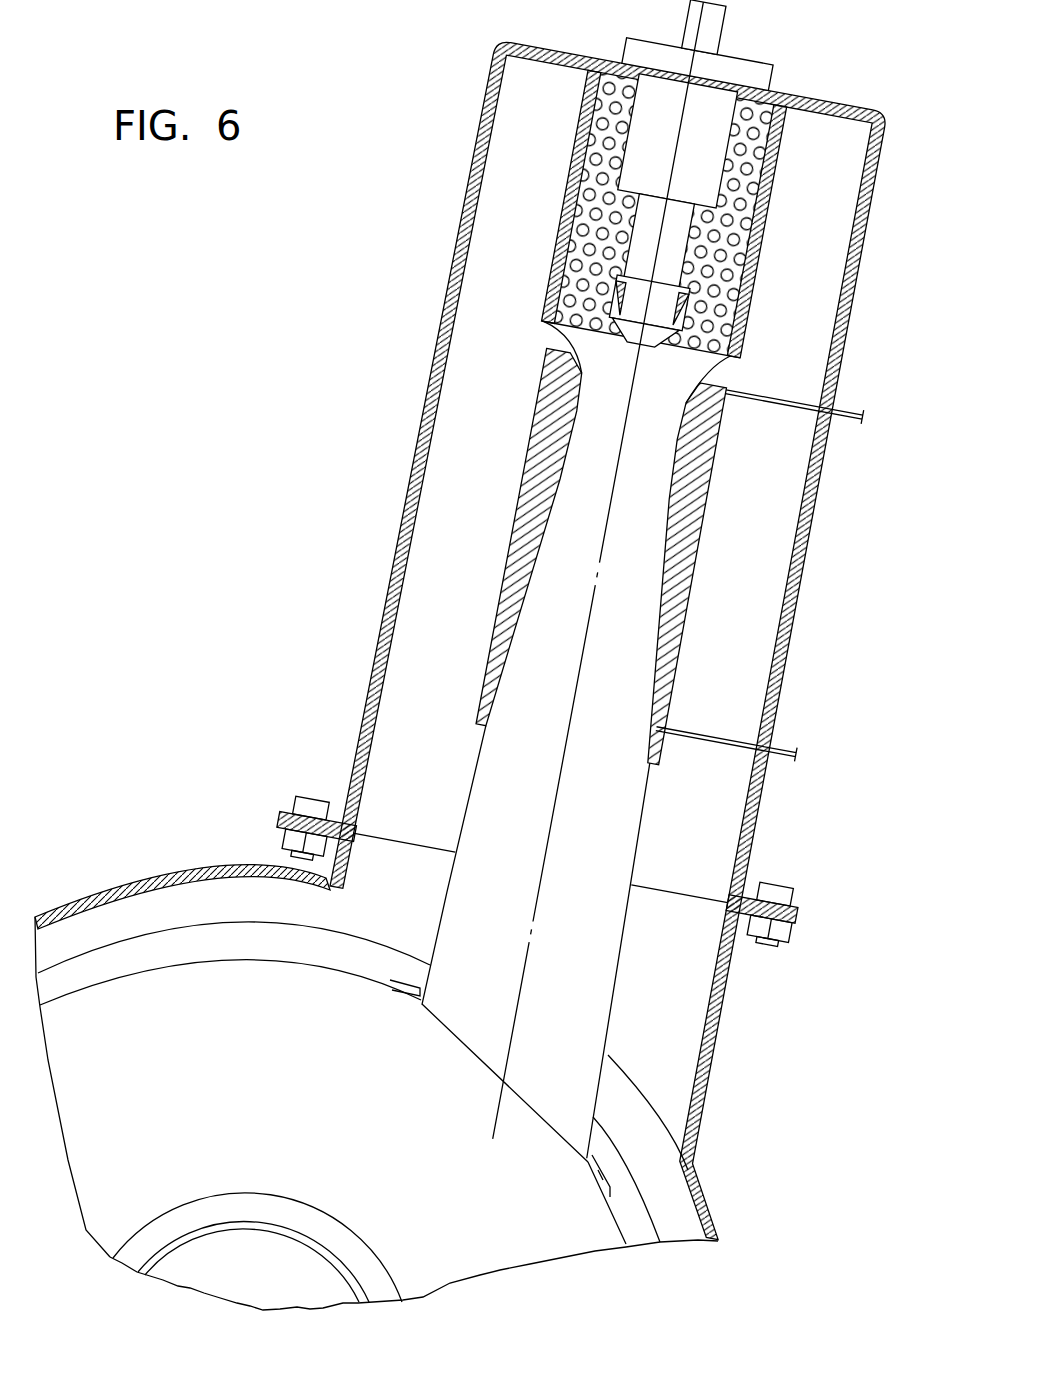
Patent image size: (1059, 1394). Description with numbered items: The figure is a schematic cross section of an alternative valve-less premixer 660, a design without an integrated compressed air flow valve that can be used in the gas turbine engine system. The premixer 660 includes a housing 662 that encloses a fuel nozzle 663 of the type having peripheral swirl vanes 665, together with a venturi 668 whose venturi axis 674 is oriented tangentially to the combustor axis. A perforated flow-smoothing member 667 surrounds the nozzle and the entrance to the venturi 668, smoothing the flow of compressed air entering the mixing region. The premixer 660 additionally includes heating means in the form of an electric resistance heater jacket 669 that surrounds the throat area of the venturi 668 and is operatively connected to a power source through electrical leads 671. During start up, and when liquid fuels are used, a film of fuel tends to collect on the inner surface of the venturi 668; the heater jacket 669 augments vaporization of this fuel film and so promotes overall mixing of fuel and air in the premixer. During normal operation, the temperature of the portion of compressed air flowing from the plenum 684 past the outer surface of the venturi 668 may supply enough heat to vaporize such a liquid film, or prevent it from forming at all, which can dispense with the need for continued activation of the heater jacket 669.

The premixer 660 is at (366, 250).
The housing 662 is at (421, 401).
The fuel nozzle 663 is at (645, 145).
The peripheral swirl vanes 665 is at (562, 326).
The perforated flow-smoothing member 667 is at (732, 243).
The venturi 668 is at (640, 815).
The electric resistance heater jacket 669 is at (690, 572).
The electrical leads 671 is at (842, 425).
The venturi axis 674 is at (528, 996).
The plenum 684 is at (386, 926).